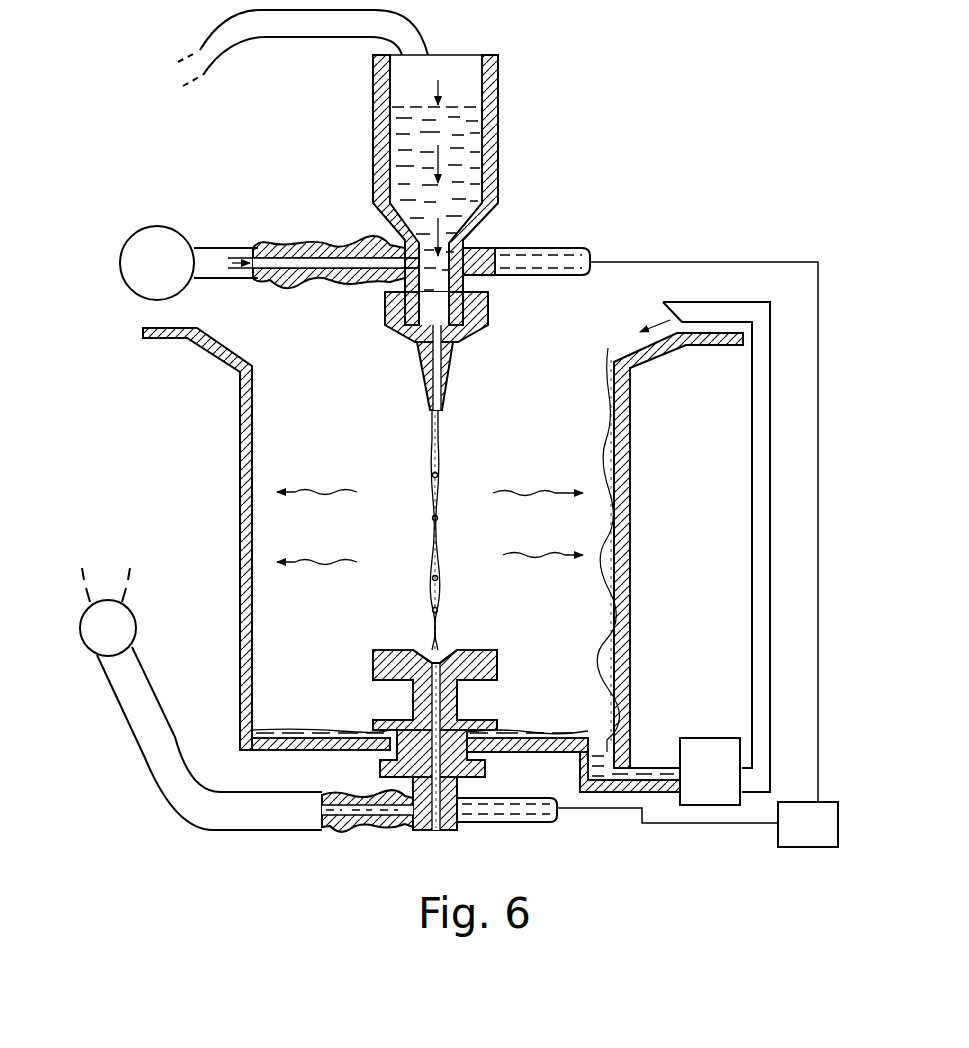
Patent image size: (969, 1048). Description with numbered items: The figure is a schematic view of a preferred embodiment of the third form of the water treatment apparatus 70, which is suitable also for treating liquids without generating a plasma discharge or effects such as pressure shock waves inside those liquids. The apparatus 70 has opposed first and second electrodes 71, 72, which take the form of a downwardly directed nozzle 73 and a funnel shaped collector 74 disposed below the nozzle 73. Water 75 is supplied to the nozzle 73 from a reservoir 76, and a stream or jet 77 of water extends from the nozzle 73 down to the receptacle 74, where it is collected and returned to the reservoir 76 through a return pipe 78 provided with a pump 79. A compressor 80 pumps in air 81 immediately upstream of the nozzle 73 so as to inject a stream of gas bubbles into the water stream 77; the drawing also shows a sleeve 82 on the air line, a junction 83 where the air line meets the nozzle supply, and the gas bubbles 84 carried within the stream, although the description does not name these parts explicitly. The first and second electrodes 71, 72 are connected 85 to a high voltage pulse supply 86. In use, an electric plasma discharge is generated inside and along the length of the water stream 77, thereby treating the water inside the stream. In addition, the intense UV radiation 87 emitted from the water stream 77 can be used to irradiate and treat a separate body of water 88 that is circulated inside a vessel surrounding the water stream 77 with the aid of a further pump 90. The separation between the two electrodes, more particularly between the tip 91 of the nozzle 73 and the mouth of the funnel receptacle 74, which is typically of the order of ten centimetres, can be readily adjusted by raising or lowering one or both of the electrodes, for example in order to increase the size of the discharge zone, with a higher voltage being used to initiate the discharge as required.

The apparatus 70 is at (222, 768).
The first electrode 71 is at (385, 313).
The second electrode 72 is at (383, 670).
The nozzle 73 is at (420, 363).
The funnel shaped collector 74 is at (397, 650).
The water 75 is at (470, 190).
The reservoir 76 is at (500, 146).
The water stream 77 is at (442, 458).
The return pipe 78 is at (260, 822).
The pump 79 is at (97, 653).
The compressor 80 is at (172, 227).
The air 81 is at (289, 258).
The sleeve 82 is at (298, 283).
The junction 83 is at (400, 250).
The droplets 84 is at (430, 480).
The connection 85 is at (660, 827).
The high voltage pulse supply 86 is at (840, 830).
The UV radiation 87 is at (542, 557).
The separate body of water 88 is at (612, 465).
The pump 90 is at (713, 745).
The tip 91 is at (422, 415).